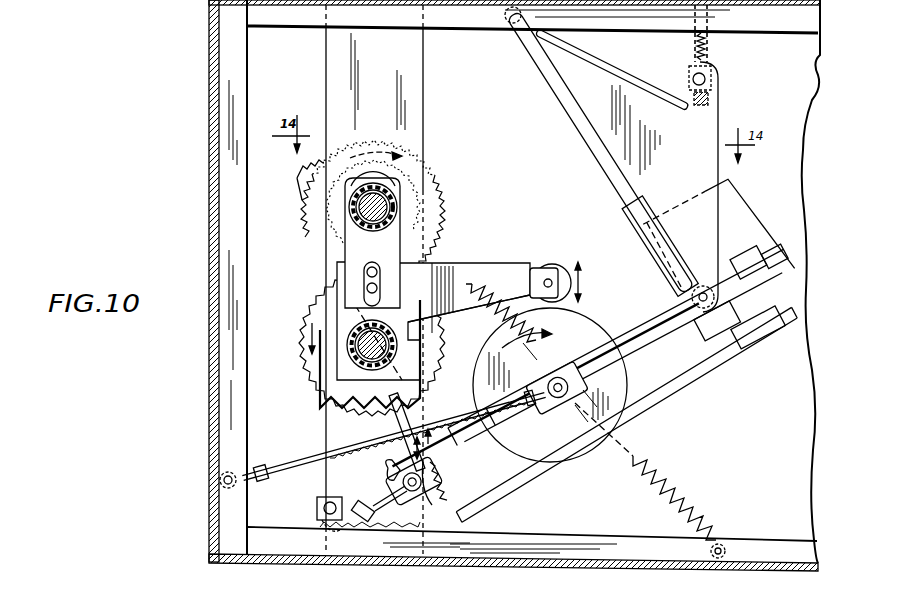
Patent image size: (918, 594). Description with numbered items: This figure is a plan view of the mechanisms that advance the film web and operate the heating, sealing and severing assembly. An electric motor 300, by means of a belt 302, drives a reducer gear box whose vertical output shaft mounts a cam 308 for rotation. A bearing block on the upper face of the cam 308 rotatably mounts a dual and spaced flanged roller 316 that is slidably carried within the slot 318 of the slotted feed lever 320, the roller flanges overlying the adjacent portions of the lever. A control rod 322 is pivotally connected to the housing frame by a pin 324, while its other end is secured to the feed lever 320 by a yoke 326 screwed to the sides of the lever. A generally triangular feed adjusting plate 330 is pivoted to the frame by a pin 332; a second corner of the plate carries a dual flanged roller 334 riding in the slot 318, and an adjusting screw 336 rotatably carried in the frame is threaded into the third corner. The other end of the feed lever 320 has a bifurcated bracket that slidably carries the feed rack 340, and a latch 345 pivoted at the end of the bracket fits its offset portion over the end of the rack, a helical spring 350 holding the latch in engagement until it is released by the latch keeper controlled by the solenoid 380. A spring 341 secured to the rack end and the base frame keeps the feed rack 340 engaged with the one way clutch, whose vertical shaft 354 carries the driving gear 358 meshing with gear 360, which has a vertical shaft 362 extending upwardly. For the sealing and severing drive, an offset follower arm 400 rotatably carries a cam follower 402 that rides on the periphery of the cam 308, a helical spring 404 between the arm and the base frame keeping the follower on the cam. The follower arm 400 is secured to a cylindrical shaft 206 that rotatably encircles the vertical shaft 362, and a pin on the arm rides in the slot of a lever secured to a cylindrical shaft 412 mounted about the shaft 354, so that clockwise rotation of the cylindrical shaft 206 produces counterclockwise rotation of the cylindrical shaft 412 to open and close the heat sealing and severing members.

The cylindrical shaft 206 is at (355, 361).
The electric motor 300 is at (747, 213).
The belt 302 is at (703, 362).
The cam 308 is at (537, 458).
The dual flanged roller 316 is at (578, 368).
The slot 318 is at (660, 322).
The slotted feed lever 320 is at (650, 346).
The control rod 322 is at (318, 455).
The pin 324 is at (220, 481).
The yoke 326 is at (557, 410).
The feed adjusting plate 330 is at (580, 97).
The pin 332 is at (508, 24).
The dual flanged roller 334 is at (688, 294).
The adjusting screw 336 is at (709, 56).
The feed rack 340 is at (397, 420).
The spring 341 is at (306, 157).
The latch 345 is at (418, 498).
The helical spring 350 is at (448, 480).
The vertical shaft 354 is at (398, 211).
The driving gear 358 is at (432, 233).
The gear 360 is at (308, 307).
The vertical shaft 362 is at (350, 336).
The solenoid 380 is at (327, 509).
The offset follower arm 400 is at (462, 309).
The cam follower 402 is at (548, 266).
The helical spring 404 is at (662, 484).
The cylindrical shaft 412 is at (388, 188).